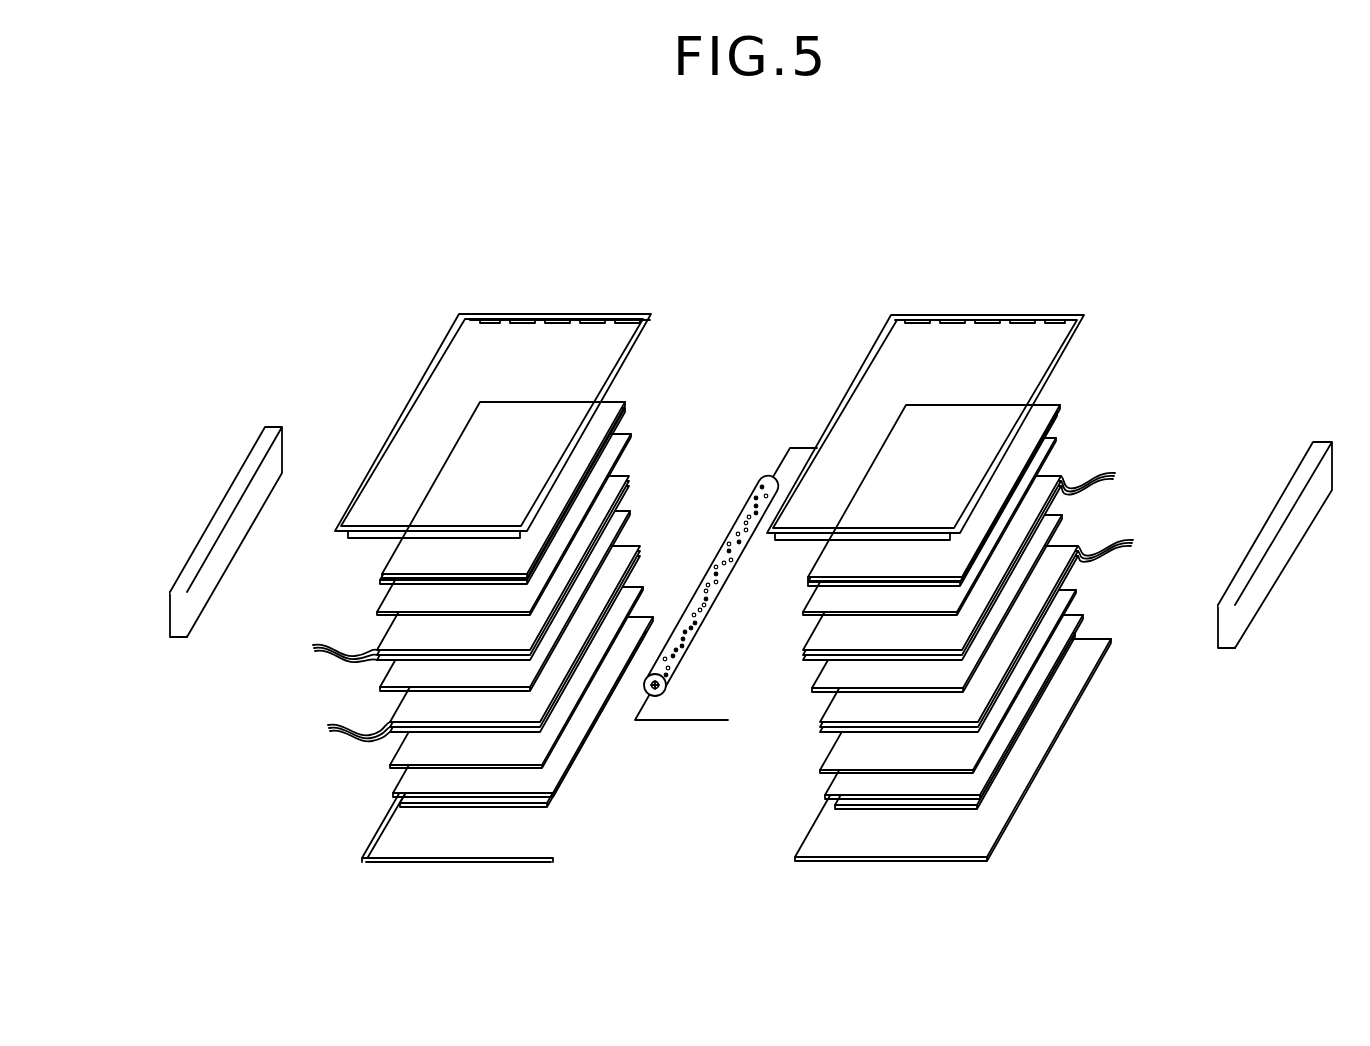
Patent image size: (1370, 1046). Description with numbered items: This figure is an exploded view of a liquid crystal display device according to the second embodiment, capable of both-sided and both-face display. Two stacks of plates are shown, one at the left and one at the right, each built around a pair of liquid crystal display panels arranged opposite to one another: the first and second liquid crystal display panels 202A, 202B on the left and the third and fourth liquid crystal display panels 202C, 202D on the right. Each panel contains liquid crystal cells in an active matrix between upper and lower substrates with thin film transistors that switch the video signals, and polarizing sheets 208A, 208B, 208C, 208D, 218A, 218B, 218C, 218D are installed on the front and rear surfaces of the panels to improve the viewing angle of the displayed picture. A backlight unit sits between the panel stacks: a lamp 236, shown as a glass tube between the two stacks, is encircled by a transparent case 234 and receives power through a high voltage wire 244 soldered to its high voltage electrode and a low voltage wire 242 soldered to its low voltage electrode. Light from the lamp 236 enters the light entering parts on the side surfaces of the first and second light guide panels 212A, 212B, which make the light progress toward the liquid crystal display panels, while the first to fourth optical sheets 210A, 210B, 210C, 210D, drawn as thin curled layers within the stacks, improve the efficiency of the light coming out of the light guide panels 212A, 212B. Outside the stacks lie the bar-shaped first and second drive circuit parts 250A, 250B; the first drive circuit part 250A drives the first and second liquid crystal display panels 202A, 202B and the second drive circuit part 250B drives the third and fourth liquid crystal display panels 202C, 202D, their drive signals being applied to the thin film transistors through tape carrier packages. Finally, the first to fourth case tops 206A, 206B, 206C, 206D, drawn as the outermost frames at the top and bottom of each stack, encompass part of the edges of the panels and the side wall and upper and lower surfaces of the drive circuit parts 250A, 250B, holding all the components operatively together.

The first liquid crystal display panel 202A is at (382, 585).
The second liquid crystal display panel 202B is at (403, 785).
The third liquid crystal display panel 202C is at (1060, 410).
The fourth liquid crystal display panel 202D is at (1075, 617).
The first case top 206A is at (449, 333).
The second case top 206B is at (377, 830).
The third case top 206C is at (1082, 322).
The fourth case top 206D is at (1082, 690).
The polarizing sheet 208A is at (385, 562).
The polarizing sheet 208B is at (398, 795).
The polarizing sheet 208C is at (1061, 400).
The polarizing sheet 208D is at (1078, 650).
The first optical sheet 210A is at (433, 571).
The second optical sheet 210B is at (447, 644).
The third optical sheet 210C is at (994, 562).
The fourth optical sheet 210D is at (1012, 630).
The first light guide panel 212A is at (380, 685).
The second light guide panel 212B is at (1063, 517).
The polarizing sheet 218A is at (377, 610).
The polarizing sheet 218B is at (398, 750).
The polarizing sheet 218C is at (1058, 440).
The polarizing sheet 218D is at (1070, 590).
The transparent case 234 is at (745, 503).
The lamp 236 is at (667, 687).
The low voltage wire 242 is at (705, 722).
The high voltage wire 244 is at (783, 460).
The first drive circuit part 250A is at (225, 517).
The second drive circuit part 250B is at (1268, 572).